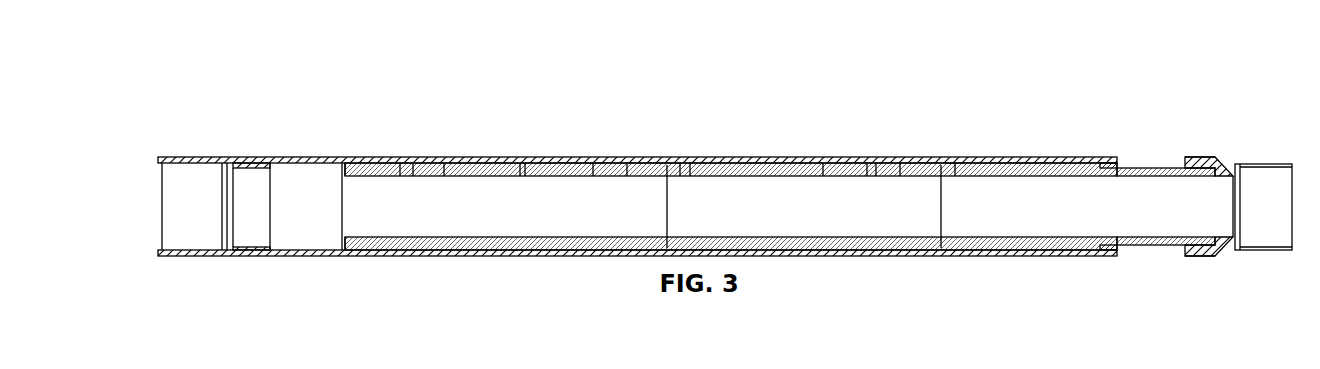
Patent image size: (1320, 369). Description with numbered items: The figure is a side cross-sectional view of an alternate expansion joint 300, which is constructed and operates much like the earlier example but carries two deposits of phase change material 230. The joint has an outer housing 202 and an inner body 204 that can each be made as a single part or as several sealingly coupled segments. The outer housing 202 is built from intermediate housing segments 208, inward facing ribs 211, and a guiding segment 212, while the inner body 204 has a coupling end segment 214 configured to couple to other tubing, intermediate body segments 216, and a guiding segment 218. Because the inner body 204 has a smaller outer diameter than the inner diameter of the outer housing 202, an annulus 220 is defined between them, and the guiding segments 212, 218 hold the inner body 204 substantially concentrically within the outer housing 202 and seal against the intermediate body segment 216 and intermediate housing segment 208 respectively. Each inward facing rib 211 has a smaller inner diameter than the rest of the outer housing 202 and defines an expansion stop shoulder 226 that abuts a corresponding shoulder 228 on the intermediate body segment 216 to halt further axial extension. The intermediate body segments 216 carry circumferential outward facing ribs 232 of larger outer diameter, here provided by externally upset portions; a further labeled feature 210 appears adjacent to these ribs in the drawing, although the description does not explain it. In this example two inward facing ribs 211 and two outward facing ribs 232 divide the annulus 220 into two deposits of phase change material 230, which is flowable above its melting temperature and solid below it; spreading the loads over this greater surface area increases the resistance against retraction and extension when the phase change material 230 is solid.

The expansion joint 300 is at (238, 88).
The outer housing 202 is at (355, 87).
The inner body 204 is at (1170, 160).
The intermediate housing segment 208 is at (444, 165).
The groove 210 is at (525, 158).
The inward facing rib 211 is at (546, 172).
The guiding segment 212 is at (1105, 165).
The coupling end segment 214 is at (1202, 158).
The intermediate body segment 216 is at (464, 165).
The guiding segment 218 is at (350, 157).
The annulus 220 is at (413, 165).
The expansion stop shoulder 226 is at (519, 157).
The shoulder 228 is at (408, 157).
The phase change material 230 is at (627, 165).
The outward facing rib 232 is at (688, 162).